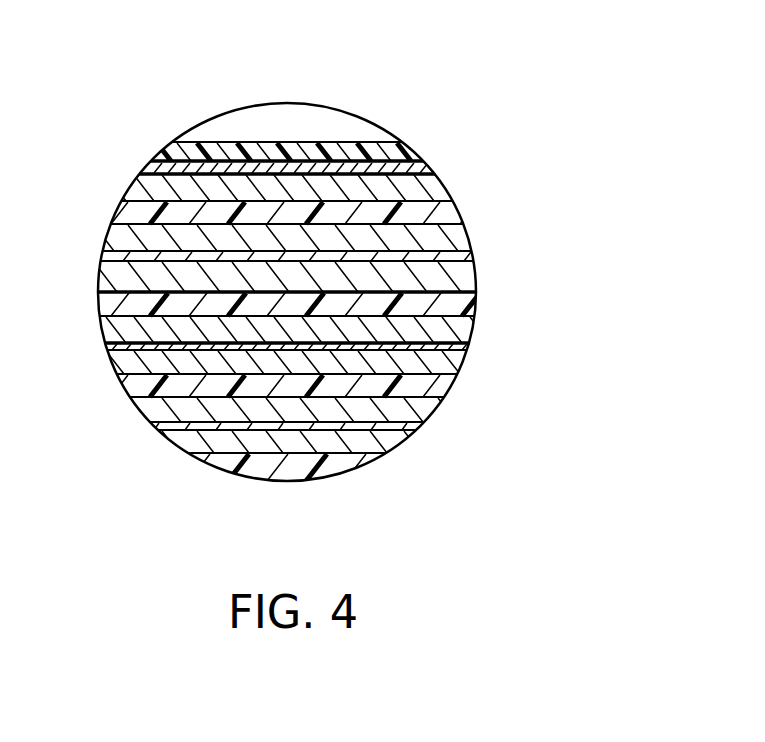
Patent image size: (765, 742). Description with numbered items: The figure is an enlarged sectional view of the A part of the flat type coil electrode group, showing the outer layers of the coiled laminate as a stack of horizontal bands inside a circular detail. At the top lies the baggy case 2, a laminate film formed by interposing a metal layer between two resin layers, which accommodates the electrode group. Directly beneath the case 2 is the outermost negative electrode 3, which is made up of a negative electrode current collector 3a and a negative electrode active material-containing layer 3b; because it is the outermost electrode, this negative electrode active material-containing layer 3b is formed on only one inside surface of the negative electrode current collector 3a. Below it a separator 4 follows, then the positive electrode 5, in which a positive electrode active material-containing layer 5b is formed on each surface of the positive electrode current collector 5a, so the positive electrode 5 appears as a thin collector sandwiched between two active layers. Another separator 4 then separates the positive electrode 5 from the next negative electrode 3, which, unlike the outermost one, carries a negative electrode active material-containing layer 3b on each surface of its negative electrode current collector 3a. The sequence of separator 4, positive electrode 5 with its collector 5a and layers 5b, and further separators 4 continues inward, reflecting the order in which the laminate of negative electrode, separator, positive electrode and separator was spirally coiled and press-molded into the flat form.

The A part A is at (198, 130).
The baggy case 2 is at (407, 152).
The negative electrode 3 is at (316, 270).
The negative electrode current collector 3a is at (428, 172).
The negative electrode active material-containing layer 3b is at (428, 192).
The separator 4 is at (125, 213).
The positive electrode 5 is at (321, 359).
The positive electrode current collector 5a is at (453, 260).
The positive electrode active material-containing layer 5b is at (450, 233).